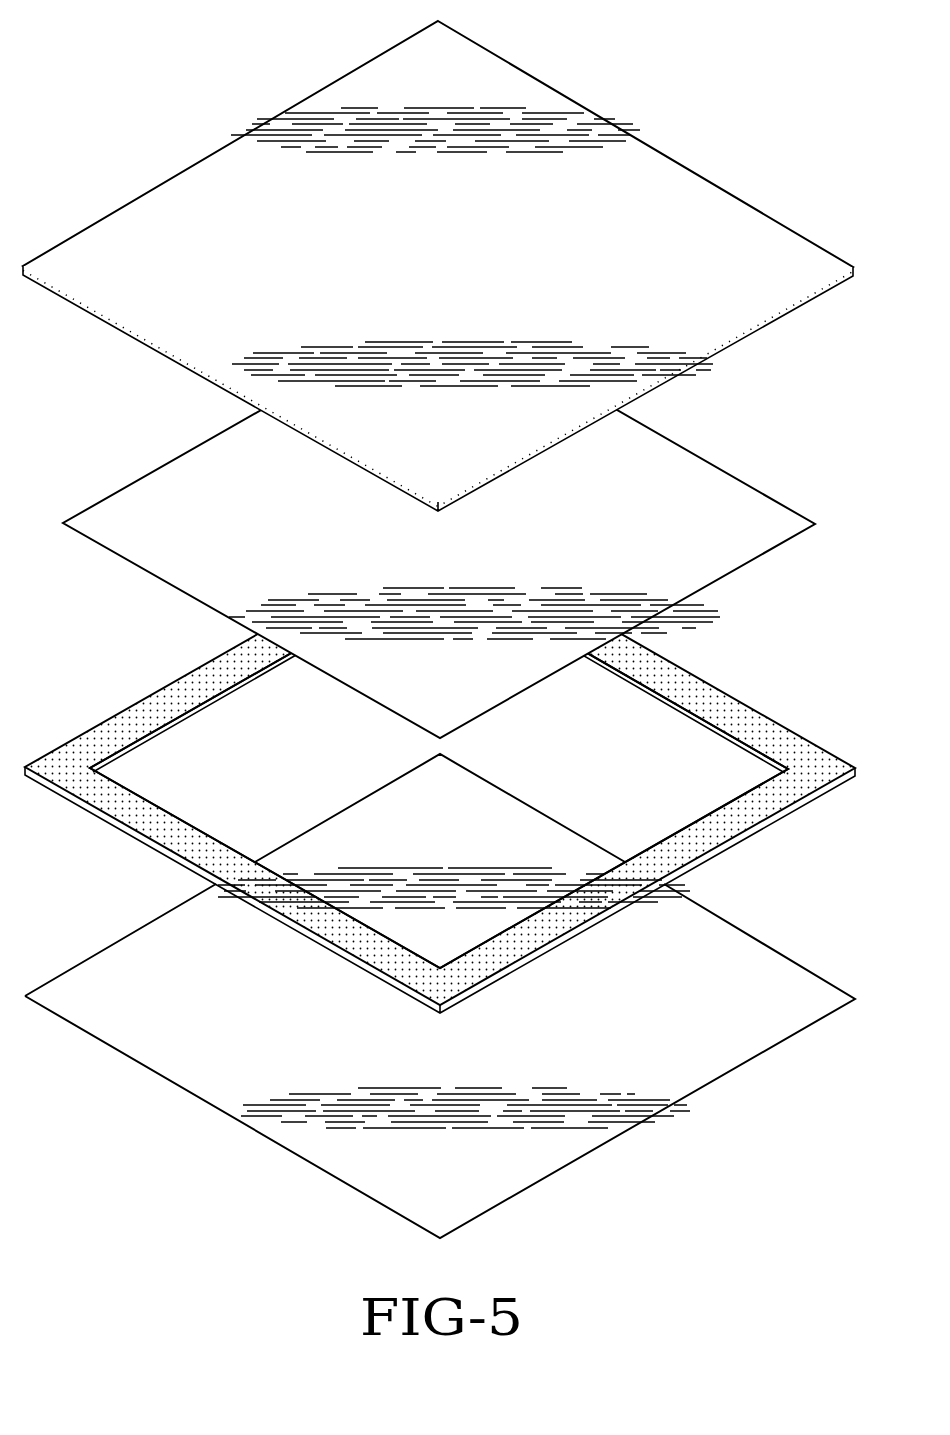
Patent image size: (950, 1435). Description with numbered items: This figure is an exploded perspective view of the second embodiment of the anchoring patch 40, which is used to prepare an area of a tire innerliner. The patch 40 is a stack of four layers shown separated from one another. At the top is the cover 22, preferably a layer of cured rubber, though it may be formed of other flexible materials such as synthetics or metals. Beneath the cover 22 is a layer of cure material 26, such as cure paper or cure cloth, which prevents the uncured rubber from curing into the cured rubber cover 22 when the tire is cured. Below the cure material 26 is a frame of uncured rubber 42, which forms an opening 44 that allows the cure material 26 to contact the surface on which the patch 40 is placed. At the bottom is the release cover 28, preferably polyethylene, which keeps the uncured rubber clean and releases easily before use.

The anchoring patch 40 is at (188, 68).
The cover 22 is at (759, 232).
The cure material 26 is at (760, 506).
The frame of uncured rubber 42 is at (762, 728).
The opening 44 is at (662, 720).
The release cover 28 is at (762, 966).